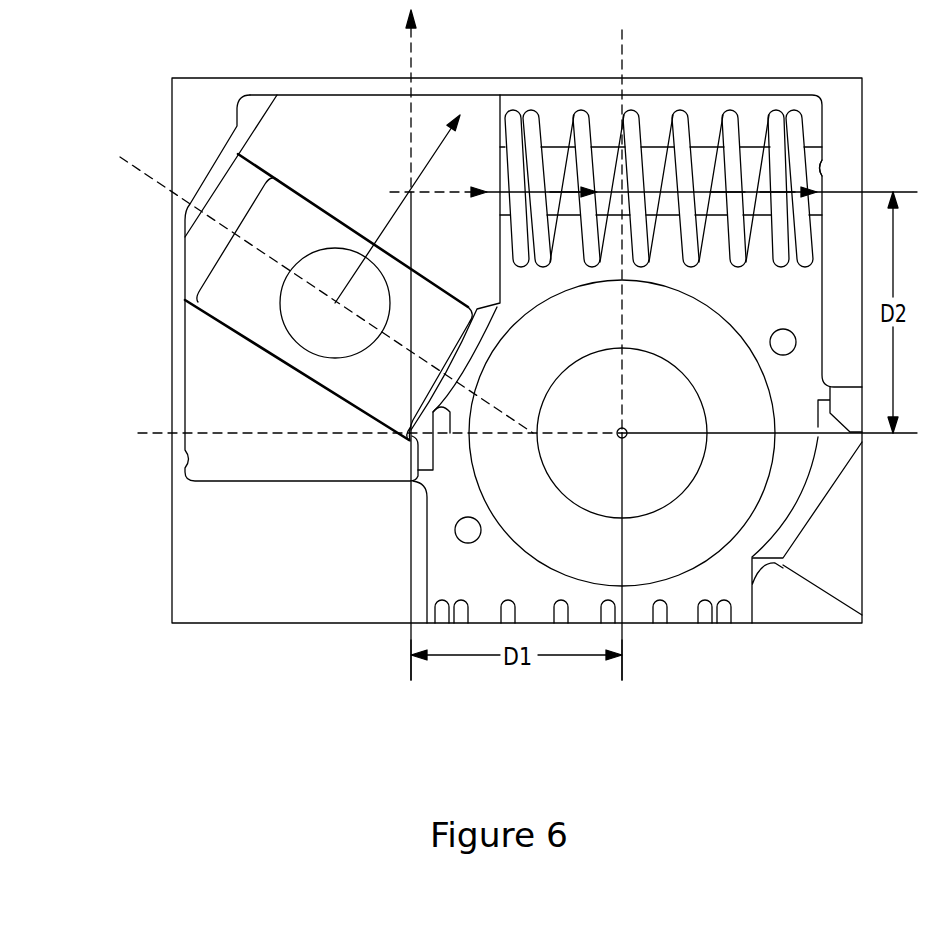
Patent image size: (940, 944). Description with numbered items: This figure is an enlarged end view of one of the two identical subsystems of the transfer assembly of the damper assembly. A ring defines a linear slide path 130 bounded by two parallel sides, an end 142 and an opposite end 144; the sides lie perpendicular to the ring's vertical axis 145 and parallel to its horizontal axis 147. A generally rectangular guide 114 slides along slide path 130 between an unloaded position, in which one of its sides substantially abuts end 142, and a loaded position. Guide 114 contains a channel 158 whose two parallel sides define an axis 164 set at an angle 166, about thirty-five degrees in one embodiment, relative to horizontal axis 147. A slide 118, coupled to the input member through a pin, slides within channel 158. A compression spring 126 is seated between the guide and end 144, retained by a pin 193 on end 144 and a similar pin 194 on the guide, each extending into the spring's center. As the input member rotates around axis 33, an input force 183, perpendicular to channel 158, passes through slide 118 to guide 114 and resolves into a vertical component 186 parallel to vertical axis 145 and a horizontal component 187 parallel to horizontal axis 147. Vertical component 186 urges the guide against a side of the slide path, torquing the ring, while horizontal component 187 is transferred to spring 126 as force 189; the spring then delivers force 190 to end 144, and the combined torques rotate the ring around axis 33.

The axis 33 is at (626, 436).
The guide 114 is at (466, 88).
The slide 118 is at (252, 357).
The spring 126 is at (740, 110).
The slide path 130 is at (606, 102).
The end 142 is at (187, 468).
The opposite end 144 is at (818, 165).
The vertical axis 145 is at (624, 46).
The horizontal axis 147 is at (152, 432).
The channel 158 is at (250, 176).
The axis 164 is at (150, 176).
The angle 166 is at (410, 441).
The input force 183 is at (397, 212).
The vertical component 186 is at (408, 56).
The horizontal component 187 is at (464, 191).
The force 189 is at (562, 197).
The force 190 is at (728, 207).
The pin 193 is at (772, 215).
The pin 194 is at (505, 219).